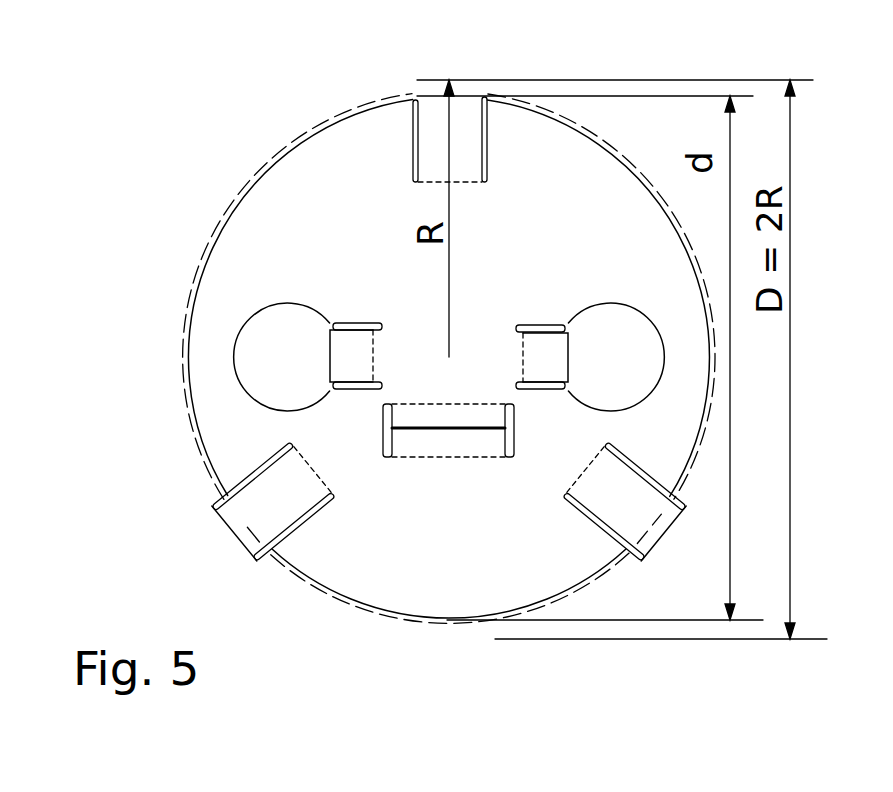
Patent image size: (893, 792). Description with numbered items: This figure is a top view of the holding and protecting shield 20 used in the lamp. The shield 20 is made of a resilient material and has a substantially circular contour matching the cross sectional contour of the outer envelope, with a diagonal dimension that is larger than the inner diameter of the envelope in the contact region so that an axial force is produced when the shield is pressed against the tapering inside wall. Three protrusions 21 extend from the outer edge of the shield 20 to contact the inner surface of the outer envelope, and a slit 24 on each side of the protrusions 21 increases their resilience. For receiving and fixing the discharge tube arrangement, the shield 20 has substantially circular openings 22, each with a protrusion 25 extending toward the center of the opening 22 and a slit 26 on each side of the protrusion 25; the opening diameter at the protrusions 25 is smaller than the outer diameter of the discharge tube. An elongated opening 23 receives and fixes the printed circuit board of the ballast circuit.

The holding and protecting shield 20 is at (293, 220).
The protrusions 21 is at (263, 510).
The substantially circular openings 22 is at (280, 347).
The elongated opening 23 is at (432, 443).
The slit 24 is at (413, 145).
The protrusion 25 is at (358, 357).
The slit 26 is at (550, 330).